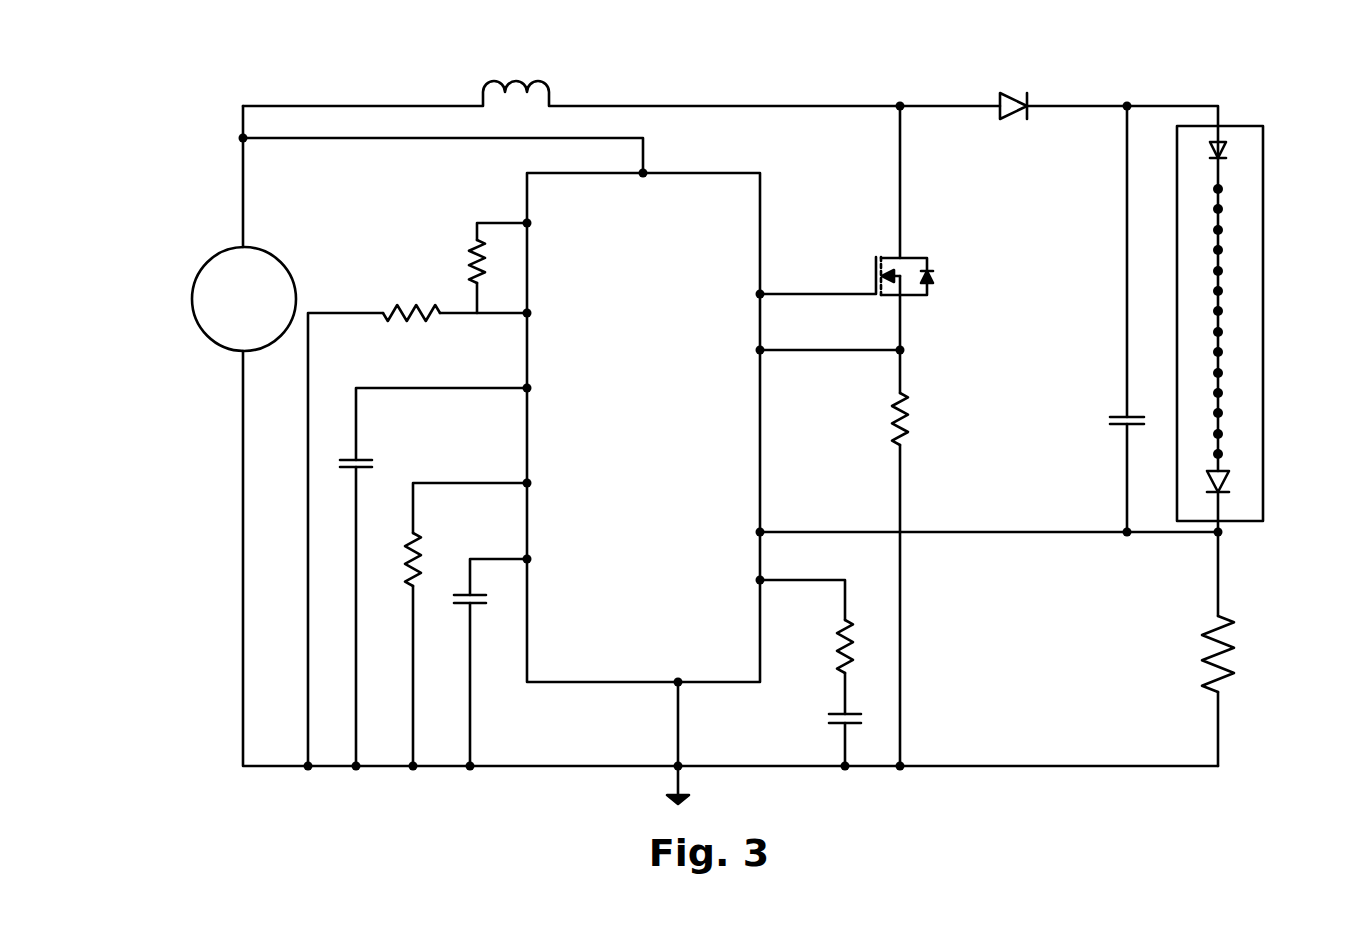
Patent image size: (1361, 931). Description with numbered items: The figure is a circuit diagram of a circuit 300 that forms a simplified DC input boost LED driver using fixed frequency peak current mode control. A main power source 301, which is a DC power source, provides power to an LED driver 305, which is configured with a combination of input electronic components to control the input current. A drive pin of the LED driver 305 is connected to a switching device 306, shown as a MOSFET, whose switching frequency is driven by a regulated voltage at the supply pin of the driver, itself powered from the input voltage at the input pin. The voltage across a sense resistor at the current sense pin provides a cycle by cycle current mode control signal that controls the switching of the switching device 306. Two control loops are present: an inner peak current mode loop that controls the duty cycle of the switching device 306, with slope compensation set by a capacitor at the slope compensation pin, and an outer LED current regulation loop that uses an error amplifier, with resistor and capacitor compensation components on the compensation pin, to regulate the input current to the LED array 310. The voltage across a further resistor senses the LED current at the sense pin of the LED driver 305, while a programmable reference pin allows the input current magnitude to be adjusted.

The circuit 300 is at (712, 80).
The main power source 301 is at (202, 333).
The LED driver 305 is at (686, 172).
The switching device 306 is at (888, 257).
The LED array 310 is at (1252, 177).